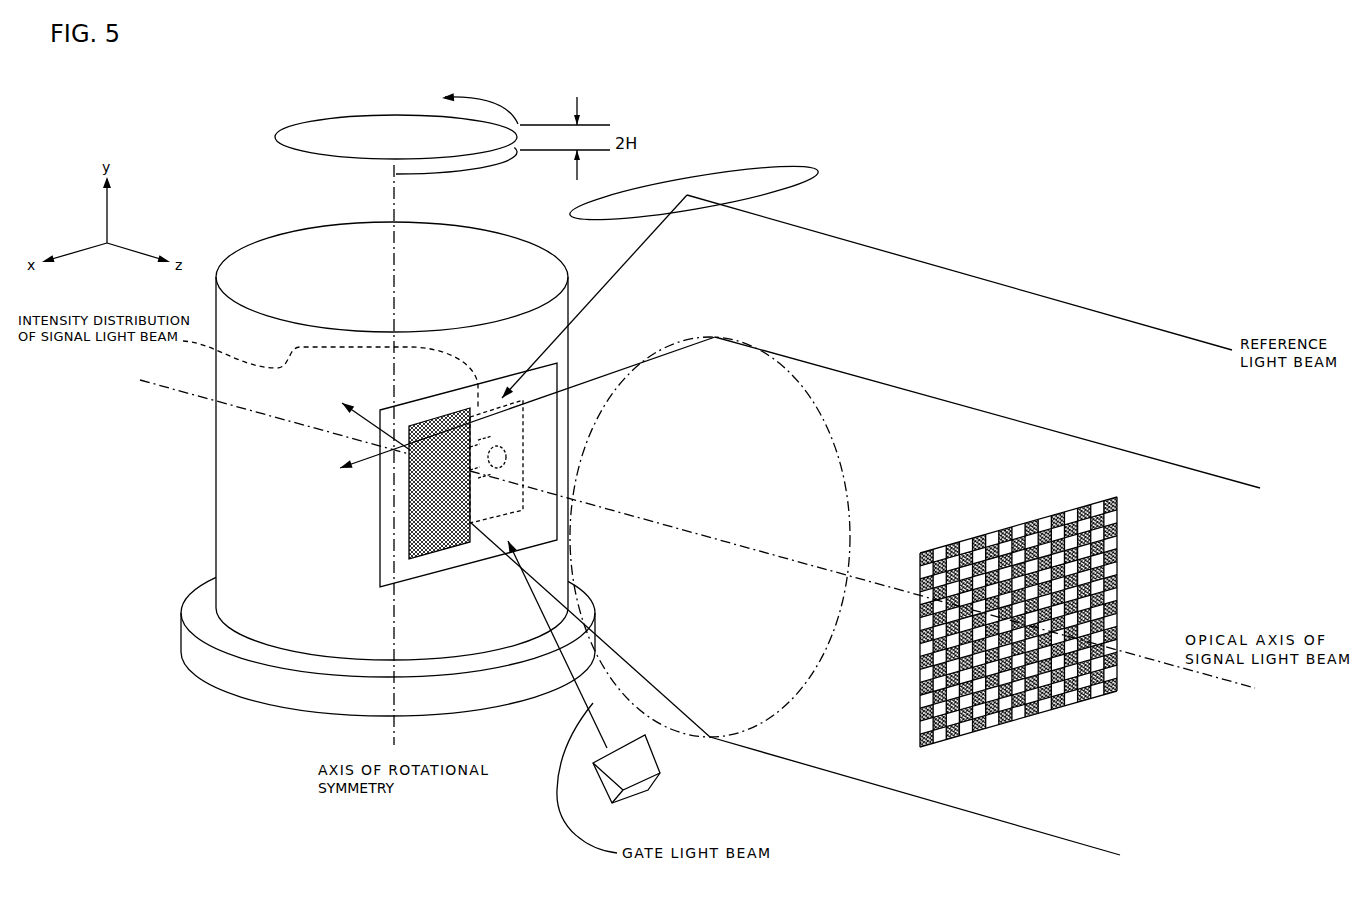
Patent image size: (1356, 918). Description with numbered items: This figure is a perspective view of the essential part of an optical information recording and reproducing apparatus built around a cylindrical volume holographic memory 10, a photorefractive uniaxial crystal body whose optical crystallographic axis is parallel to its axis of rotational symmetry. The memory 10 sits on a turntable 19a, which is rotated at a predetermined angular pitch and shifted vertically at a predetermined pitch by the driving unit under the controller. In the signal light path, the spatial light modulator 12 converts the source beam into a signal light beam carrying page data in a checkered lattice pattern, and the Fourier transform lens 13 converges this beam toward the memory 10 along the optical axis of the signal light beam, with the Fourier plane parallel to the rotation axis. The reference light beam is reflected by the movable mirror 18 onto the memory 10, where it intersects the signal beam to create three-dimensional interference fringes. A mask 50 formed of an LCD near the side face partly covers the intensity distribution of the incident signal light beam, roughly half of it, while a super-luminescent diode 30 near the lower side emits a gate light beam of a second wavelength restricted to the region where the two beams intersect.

The volume holographic memory 10 is at (272, 258).
The spatial light modulator 12 is at (1105, 690).
The Fourier transform lens 13 is at (743, 730).
The movable mirror 18 is at (818, 170).
The turntable 19a is at (258, 695).
The super-luminescent diode 30 is at (645, 763).
The mask 50 is at (383, 515).